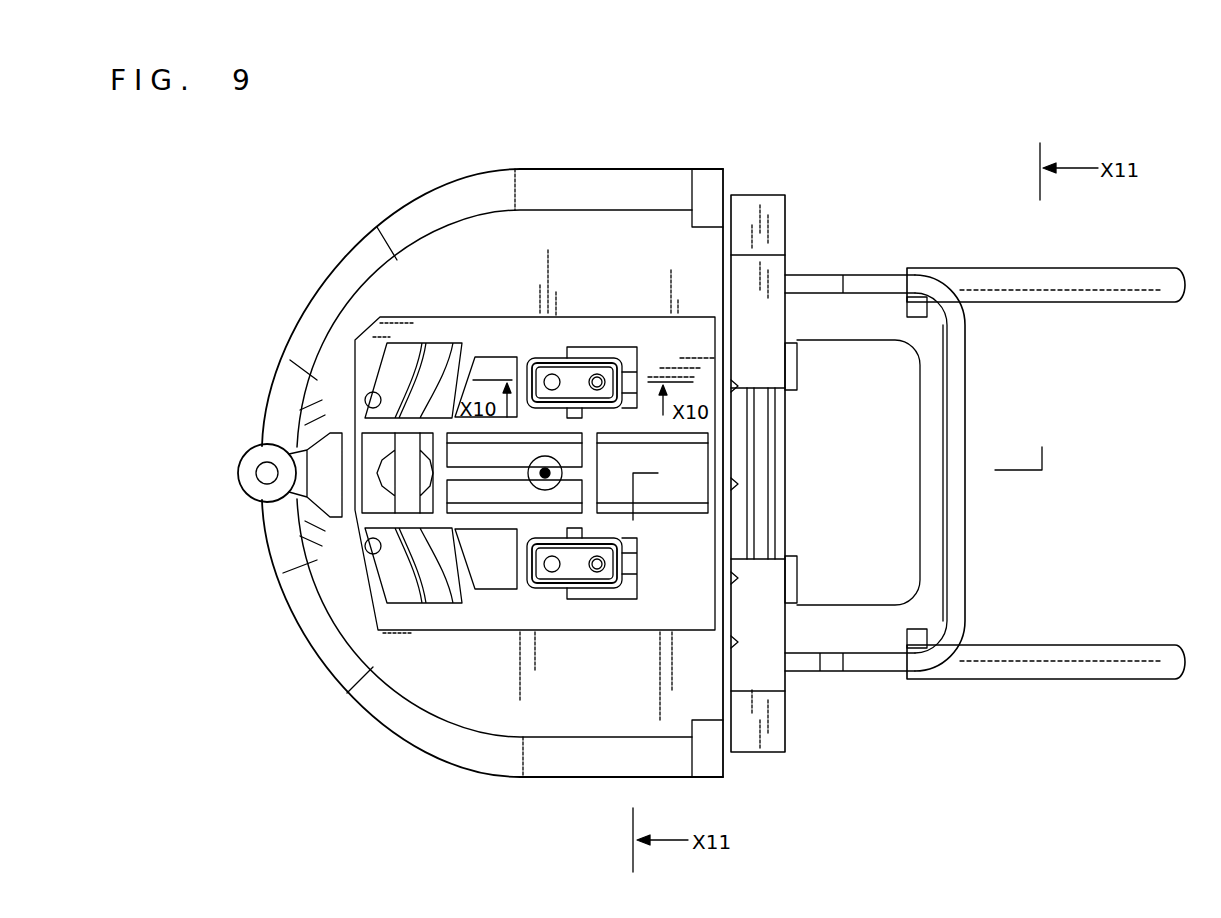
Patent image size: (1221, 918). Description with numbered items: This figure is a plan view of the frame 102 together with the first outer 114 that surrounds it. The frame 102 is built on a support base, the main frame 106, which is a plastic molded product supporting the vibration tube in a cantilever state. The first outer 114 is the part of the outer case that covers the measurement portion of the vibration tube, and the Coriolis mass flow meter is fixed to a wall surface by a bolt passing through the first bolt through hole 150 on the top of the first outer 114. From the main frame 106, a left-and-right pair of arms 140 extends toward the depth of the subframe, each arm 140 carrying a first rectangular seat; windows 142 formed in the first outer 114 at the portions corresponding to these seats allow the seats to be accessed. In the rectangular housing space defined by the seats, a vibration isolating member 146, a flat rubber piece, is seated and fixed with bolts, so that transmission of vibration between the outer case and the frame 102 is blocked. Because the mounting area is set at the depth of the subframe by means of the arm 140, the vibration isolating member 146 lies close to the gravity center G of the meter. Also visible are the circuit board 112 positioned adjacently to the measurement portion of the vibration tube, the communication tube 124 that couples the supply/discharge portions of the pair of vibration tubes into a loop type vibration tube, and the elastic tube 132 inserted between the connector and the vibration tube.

The first outer 114 is at (430, 215).
The first bolt through hole 150 is at (240, 466).
The vibration isolating member 146 is at (573, 372).
The window 142 is at (603, 357).
The arm 140 is at (633, 377).
The main frame 106 is at (772, 212).
The frame 102 is at (804, 435).
The circuit board 112 is at (922, 408).
The communication tube 124 is at (957, 560).
The elastic tube 132 is at (1128, 275).
The gravity center G is at (543, 483).